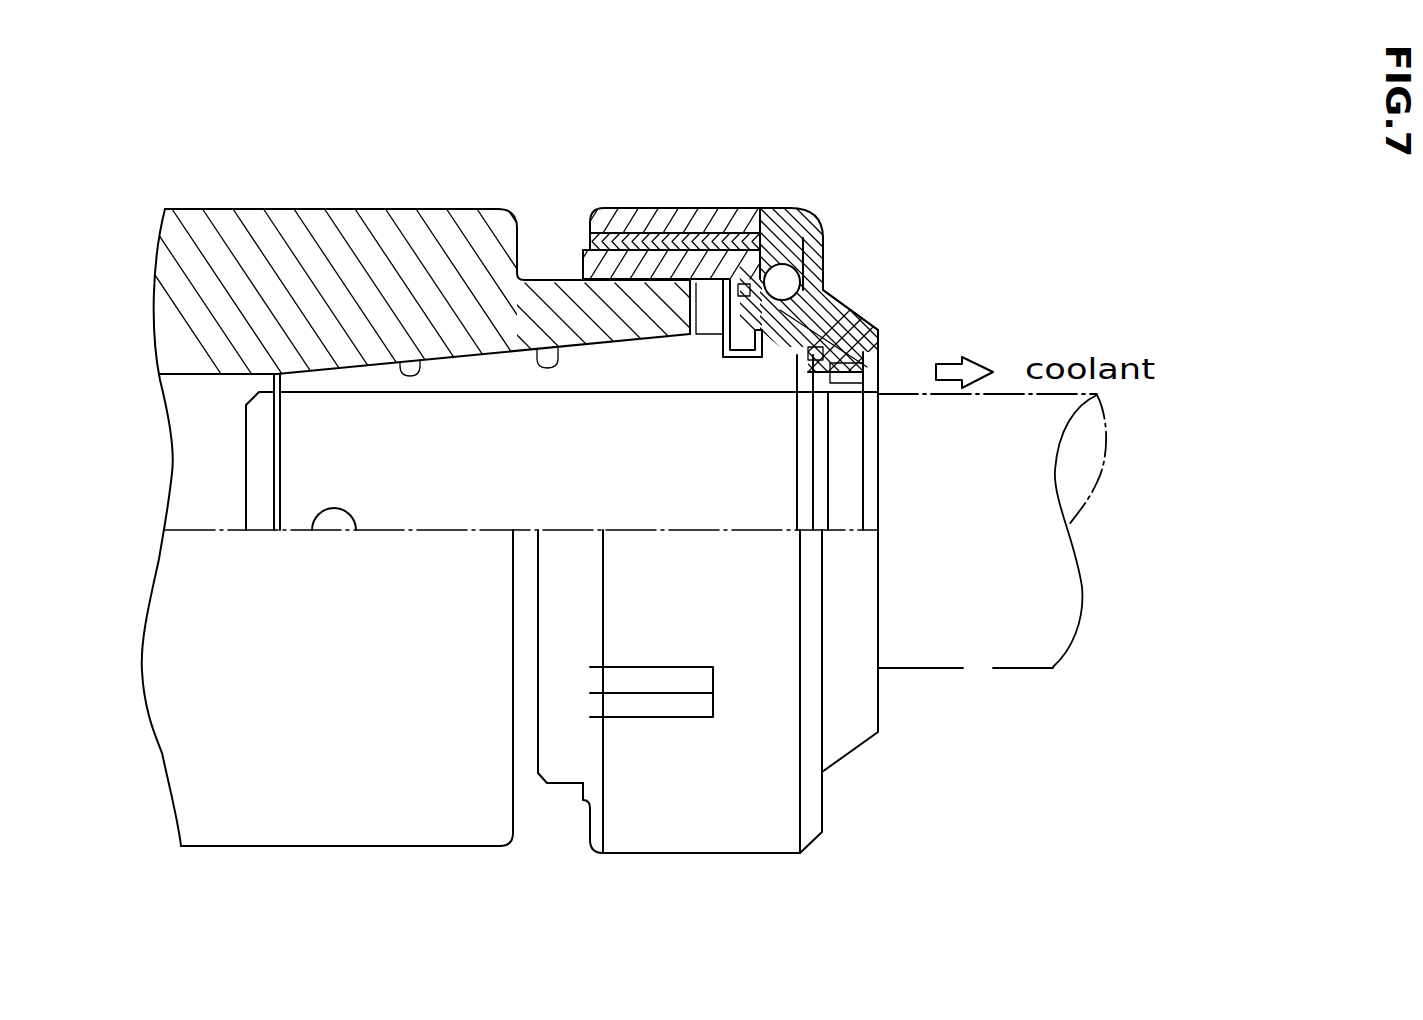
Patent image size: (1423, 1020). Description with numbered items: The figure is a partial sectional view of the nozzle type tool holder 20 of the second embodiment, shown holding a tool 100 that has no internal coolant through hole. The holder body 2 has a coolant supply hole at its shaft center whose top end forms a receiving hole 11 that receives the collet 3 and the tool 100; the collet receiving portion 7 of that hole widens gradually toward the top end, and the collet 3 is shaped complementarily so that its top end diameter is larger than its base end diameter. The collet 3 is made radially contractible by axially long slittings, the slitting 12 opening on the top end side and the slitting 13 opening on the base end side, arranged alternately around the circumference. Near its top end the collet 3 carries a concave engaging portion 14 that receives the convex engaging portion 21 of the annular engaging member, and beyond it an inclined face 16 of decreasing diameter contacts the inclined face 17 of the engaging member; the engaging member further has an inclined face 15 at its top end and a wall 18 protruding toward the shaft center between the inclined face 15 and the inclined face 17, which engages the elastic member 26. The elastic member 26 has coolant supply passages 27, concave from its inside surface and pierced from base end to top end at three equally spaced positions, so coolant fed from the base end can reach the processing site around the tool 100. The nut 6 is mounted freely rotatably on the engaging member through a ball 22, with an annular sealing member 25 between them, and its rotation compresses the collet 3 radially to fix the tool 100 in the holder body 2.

The holder body 2 is at (235, 738).
The collet 3 is at (508, 367).
The nut 6 is at (622, 222).
The collet receiving portion 7 is at (560, 352).
The receiving hole 11 is at (420, 368).
The slitting 12 is at (775, 533).
The slitting 13 is at (333, 378).
The concave engaging portion 14 is at (740, 345).
The inclined face 15 is at (822, 350).
The inclined face 16 is at (780, 345).
The inclined face 17 is at (833, 297).
The wall 18 is at (797, 357).
The tool holder 20 is at (1020, 170).
The convex engaging portion 21 is at (783, 280).
The ball 22 is at (820, 212).
The annular sealing member 25 is at (743, 284).
The elastic member 26 is at (855, 381).
The coolant supply passage 27 is at (857, 383).
The tool 100 is at (967, 645).